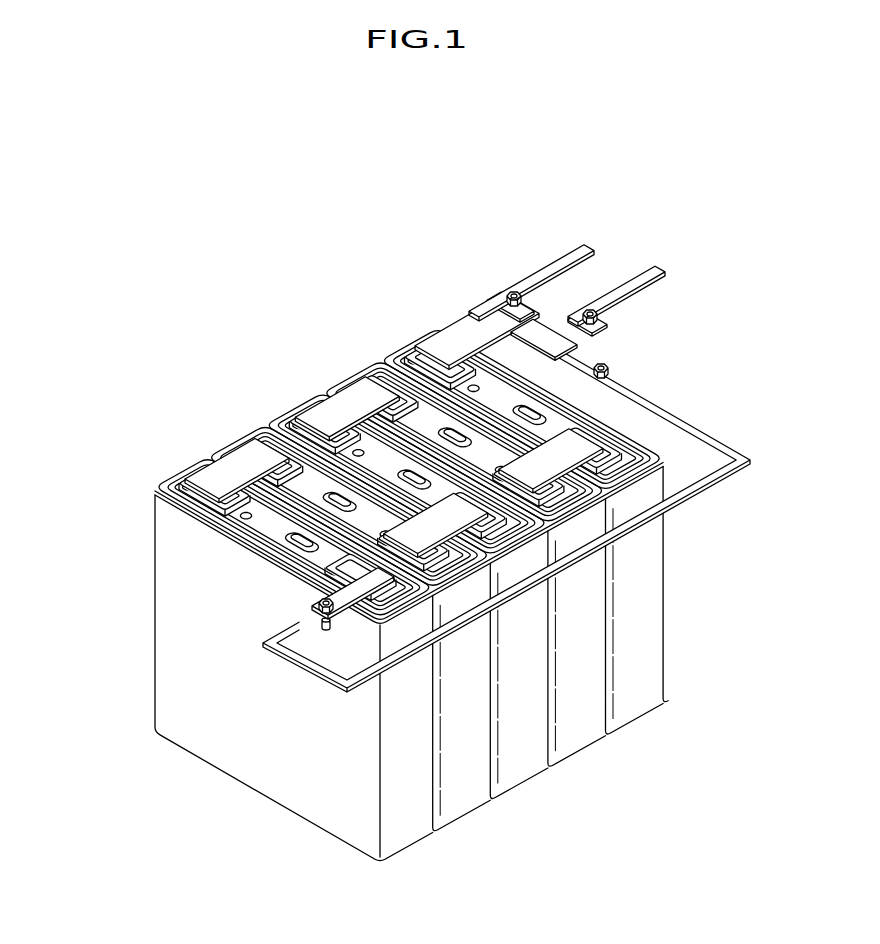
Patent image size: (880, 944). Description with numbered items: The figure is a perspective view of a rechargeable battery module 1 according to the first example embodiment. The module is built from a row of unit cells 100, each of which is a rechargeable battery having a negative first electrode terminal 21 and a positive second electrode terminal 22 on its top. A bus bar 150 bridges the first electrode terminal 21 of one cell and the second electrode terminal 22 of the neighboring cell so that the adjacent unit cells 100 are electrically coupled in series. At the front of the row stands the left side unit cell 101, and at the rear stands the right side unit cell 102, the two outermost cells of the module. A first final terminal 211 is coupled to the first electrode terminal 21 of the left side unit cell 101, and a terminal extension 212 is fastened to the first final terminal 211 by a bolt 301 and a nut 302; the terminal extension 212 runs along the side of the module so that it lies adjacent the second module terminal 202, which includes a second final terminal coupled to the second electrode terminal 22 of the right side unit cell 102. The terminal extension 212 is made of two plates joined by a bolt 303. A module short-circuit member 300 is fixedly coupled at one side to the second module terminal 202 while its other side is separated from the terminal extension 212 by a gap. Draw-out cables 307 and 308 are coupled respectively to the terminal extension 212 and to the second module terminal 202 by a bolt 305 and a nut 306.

The rechargeable battery module 1 is at (334, 242).
The unit cells 100 is at (469, 615).
The left side unit cell 101 is at (408, 812).
The right side unit cell 102 is at (643, 658).
The first electrode terminal 21 is at (256, 431).
The second electrode terminal 22 is at (185, 465).
The bus bar 150 is at (248, 457).
The second module terminal 202 is at (458, 330).
The first final terminal 211 is at (313, 576).
The terminal extension 212 is at (575, 348).
The module short-circuit member 300 is at (538, 324).
The bolt 301 is at (317, 608).
The nut 302 is at (325, 632).
The bolt 303 is at (618, 377).
The bolt 305 is at (513, 292).
The nut 306 is at (503, 318).
The draw-out cable 307 is at (553, 277).
The draw-out cable 308 is at (646, 298).